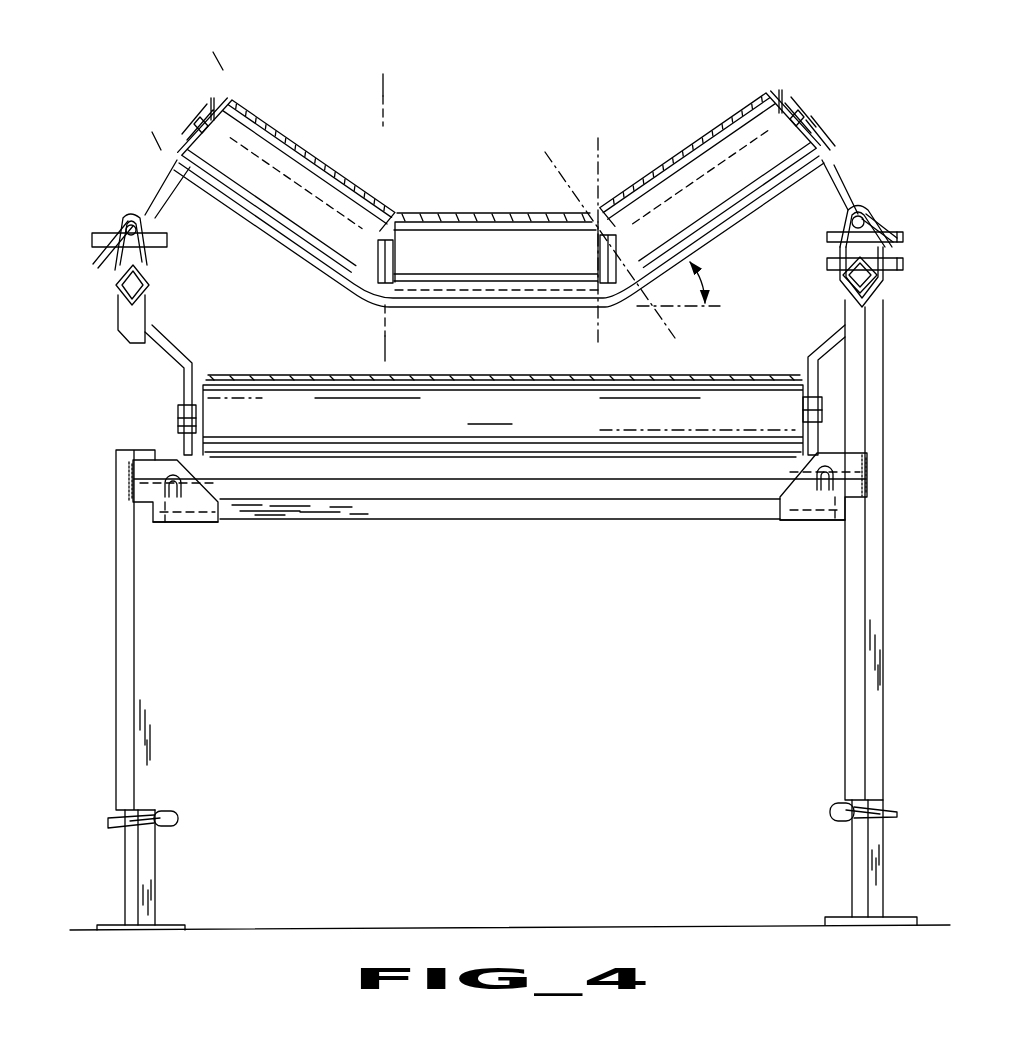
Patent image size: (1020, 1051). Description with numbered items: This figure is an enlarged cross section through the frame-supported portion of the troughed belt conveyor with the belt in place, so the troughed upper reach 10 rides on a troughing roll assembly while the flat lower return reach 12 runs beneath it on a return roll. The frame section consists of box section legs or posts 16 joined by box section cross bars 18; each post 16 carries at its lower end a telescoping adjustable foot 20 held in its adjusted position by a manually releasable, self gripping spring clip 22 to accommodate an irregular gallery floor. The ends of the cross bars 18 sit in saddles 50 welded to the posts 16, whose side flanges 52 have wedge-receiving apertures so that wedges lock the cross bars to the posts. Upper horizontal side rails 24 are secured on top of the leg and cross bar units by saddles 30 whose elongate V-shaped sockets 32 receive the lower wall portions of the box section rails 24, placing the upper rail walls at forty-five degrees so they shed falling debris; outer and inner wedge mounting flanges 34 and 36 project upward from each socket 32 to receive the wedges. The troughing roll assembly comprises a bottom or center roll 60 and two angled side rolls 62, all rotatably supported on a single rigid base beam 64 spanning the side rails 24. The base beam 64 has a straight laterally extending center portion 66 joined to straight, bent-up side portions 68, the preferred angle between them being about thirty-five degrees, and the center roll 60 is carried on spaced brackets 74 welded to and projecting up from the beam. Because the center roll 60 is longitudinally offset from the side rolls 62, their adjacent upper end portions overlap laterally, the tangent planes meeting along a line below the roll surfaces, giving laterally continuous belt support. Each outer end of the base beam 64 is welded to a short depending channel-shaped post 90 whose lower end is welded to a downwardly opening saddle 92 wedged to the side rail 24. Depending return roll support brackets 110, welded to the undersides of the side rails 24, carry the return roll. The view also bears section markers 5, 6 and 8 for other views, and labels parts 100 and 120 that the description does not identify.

The idler support stand 5 is at (213, 777).
The section line 6- 6 is at (383, 83).
The section line 8- 8 is at (221, 50).
The upper reach 10 is at (448, 211).
The lower return reach 12 is at (352, 373).
The legs or posts 16 is at (147, 678).
The cross bars 18 is at (508, 519).
The telescoping adjustable foot 20 is at (150, 873).
The spring clip 22 is at (178, 813).
The upper horizontal rails 24 is at (148, 285).
The saddles 30 is at (880, 304).
The V-shaped socket 32 is at (883, 283).
The outer wedge mounting flange 34 is at (174, 499).
The inner wedge mounting flange 36 is at (843, 275).
The saddles 50 is at (218, 522).
The side flange 52 is at (168, 455).
The bottom or center roll 60 is at (480, 265).
The angled side rolls 62 is at (233, 98).
The base beam 64 is at (829, 155).
The center portion 66 is at (542, 309).
The side portions 68 is at (328, 277).
The brackets 74 is at (378, 298).
The channel-shaped post 90 is at (168, 212).
The saddle 92 is at (122, 212).
The tie rod 100 is at (113, 275).
The return roll support brackets 110 is at (132, 333).
The return roller hanger arm 120 is at (190, 353).